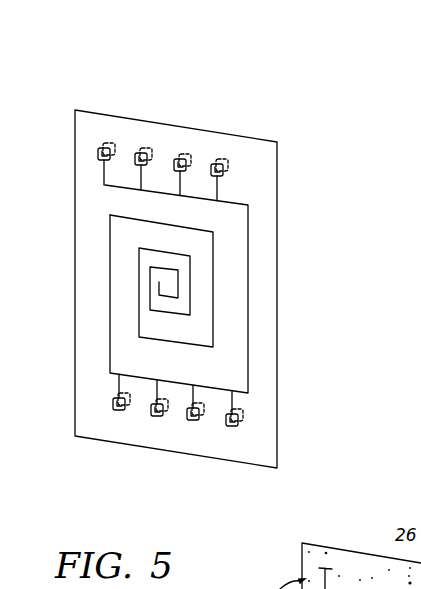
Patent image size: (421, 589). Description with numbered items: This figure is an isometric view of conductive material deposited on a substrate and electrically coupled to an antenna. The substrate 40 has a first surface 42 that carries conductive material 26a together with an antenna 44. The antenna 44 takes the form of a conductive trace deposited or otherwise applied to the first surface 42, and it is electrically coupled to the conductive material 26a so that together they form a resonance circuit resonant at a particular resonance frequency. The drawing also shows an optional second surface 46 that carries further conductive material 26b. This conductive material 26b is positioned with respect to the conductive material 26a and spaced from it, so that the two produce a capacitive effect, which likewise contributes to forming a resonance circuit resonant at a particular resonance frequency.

The substrate 40 is at (278, 151).
The first surface 42 is at (104, 299).
The antenna 44 is at (248, 298).
The second surface 46 is at (264, 201).
The conductive material 26a is at (179, 139).
The conductive material 26b is at (242, 156).